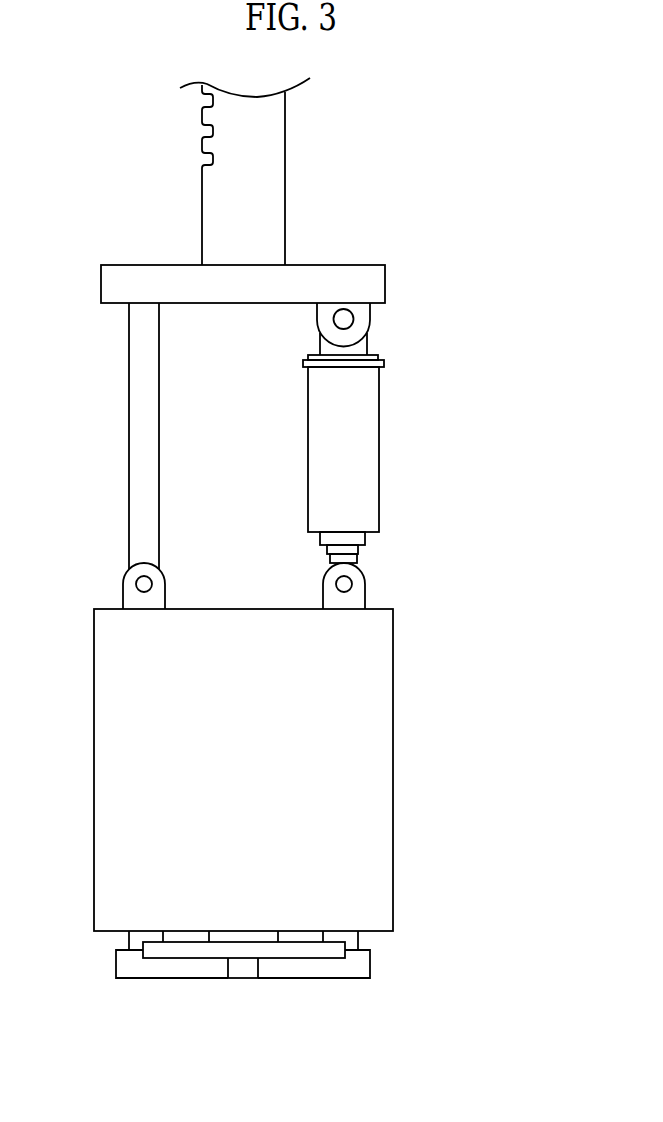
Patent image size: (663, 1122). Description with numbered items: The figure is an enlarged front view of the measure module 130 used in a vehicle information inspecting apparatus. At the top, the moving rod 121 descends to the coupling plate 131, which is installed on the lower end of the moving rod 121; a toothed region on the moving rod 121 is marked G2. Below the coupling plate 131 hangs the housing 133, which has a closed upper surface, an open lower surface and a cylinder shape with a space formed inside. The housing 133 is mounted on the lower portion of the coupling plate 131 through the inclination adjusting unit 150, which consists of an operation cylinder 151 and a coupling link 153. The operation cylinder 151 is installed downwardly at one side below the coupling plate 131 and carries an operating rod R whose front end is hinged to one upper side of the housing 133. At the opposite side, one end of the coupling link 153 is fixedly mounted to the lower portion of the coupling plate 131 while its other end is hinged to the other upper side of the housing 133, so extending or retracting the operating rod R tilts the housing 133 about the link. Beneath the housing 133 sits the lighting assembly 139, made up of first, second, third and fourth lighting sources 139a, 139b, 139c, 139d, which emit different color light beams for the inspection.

The moving rod 121 is at (267, 165).
The groove G2 is at (194, 112).
The coupling plate 131 is at (360, 278).
The coupling link 153 is at (143, 442).
The inclination adjusting unit 150 is at (390, 456).
The operation cylinder 151 is at (362, 455).
The operating rod R is at (347, 558).
The measure module 130 is at (296, 847).
The housing 133 is at (372, 762).
The lighting assembly 139 is at (284, 1005).
The first lighting source 139a is at (330, 951).
The second lighting source 139b is at (245, 969).
The third lighting source 139c is at (188, 968).
The fourth lighting source 139d is at (352, 968).